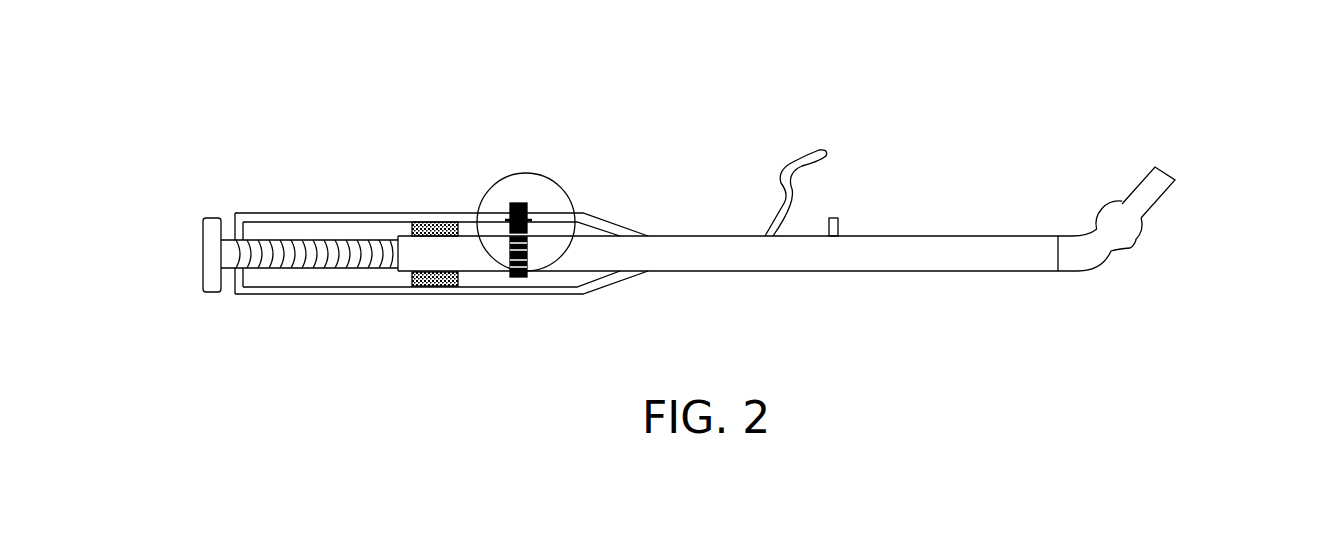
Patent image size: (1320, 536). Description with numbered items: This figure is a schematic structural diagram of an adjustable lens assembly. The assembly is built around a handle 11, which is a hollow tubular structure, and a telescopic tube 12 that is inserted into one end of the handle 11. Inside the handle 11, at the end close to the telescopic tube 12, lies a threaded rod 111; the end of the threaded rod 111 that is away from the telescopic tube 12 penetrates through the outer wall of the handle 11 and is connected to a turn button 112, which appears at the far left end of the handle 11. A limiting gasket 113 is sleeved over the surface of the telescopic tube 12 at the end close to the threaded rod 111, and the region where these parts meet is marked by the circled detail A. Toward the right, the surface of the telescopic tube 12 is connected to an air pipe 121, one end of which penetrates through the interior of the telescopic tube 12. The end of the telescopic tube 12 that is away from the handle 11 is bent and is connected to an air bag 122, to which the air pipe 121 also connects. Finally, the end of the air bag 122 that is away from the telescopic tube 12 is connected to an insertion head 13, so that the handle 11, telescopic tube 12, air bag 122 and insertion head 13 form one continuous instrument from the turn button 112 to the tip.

The handle 11 is at (353, 210).
The threaded rod 111 is at (282, 247).
The turn button 112 is at (208, 250).
The limiting gasket 113 is at (433, 227).
The telescopic tube 12 is at (928, 235).
The air pipe 121 is at (793, 200).
The air bag 122 is at (1113, 216).
The insertion head 13 is at (1160, 183).
The detail region A is at (499, 181).